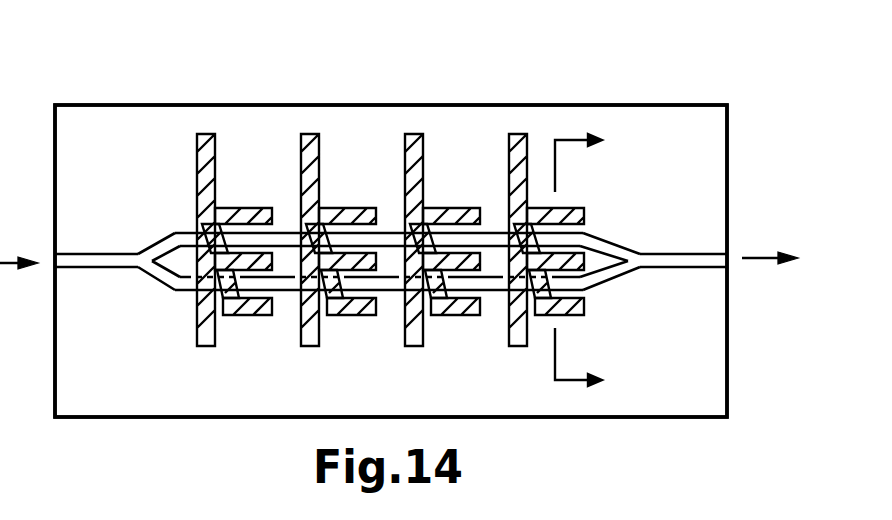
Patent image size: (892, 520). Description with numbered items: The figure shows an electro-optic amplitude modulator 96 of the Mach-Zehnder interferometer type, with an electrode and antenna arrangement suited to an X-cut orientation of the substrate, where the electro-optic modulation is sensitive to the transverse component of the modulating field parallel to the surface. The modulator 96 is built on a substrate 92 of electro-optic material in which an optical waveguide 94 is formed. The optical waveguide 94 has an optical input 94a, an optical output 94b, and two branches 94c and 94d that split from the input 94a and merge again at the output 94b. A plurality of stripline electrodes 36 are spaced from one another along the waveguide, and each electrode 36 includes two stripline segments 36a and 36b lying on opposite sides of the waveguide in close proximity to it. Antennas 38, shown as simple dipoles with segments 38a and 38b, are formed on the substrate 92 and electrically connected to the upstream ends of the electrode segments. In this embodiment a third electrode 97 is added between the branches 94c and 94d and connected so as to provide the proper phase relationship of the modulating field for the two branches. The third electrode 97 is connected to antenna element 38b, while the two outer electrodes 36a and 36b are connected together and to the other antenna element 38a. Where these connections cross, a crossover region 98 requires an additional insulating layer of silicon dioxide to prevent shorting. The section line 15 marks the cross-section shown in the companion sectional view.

The section line 15 is at (599, 260).
The stripline electrode 36 is at (349, 196).
The stripline segment 36a is at (443, 208).
The stripline segment 36b is at (462, 308).
The antenna 38 is at (386, 215).
The antenna segment 38a is at (415, 133).
The antenna segment 38b is at (408, 320).
The substrate 92 is at (232, 105).
The optical waveguide 94 is at (391, 271).
The optical input 94a is at (85, 254).
The optical output 94b is at (688, 252).
The branch 94c is at (165, 244).
The branch 94d is at (615, 276).
The modulator 96 is at (73, 88).
The third electrode 97 is at (576, 243).
The crossover region 98 is at (515, 260).